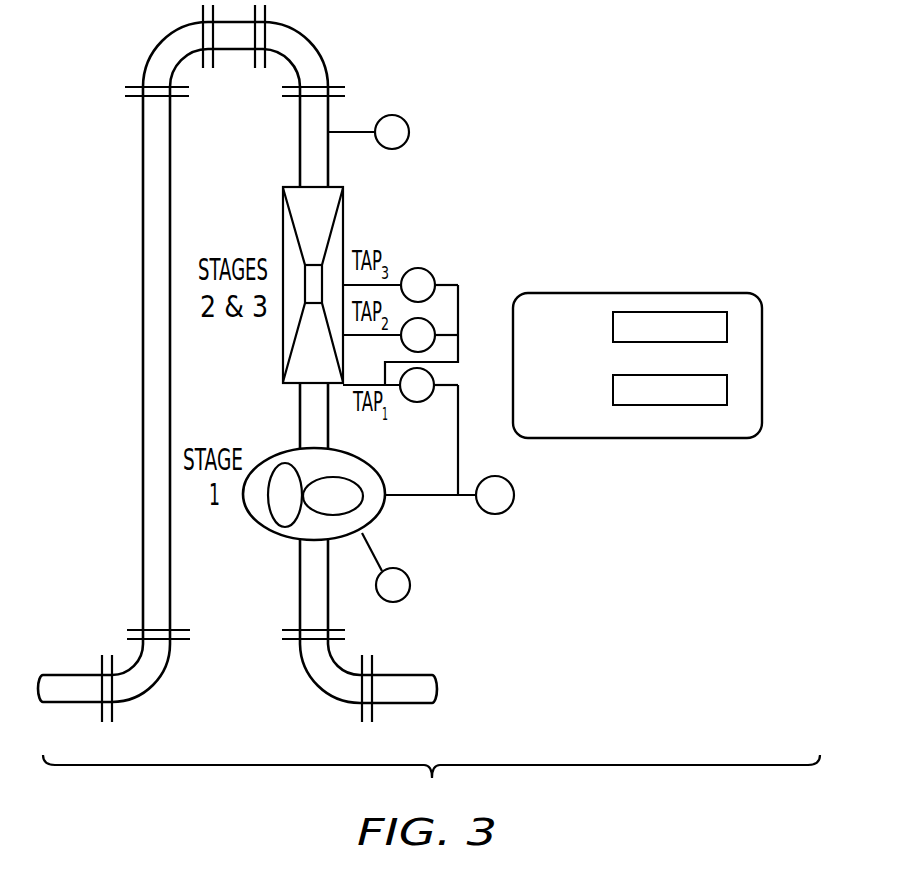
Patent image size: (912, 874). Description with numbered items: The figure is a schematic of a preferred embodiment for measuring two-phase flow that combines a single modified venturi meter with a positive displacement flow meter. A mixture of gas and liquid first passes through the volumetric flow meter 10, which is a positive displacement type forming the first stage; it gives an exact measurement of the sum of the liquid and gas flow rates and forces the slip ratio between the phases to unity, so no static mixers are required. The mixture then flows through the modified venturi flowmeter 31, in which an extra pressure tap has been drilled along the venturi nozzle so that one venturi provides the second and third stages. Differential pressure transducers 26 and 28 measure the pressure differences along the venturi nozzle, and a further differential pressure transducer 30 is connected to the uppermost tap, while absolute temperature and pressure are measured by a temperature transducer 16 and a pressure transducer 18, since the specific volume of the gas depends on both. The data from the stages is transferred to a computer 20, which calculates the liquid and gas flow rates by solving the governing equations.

The volumetric flow meter 10 is at (266, 527).
The temperature transducer 16 is at (400, 117).
The pressure transducer 18 is at (509, 508).
The computer 20 is at (537, 296).
The differential pressure transducer 26 is at (418, 403).
The differential pressure transducer 28 is at (432, 323).
The differential pressure sensor (tap 3) 30 is at (423, 268).
The modified venturi flowmeter 31 is at (283, 353).